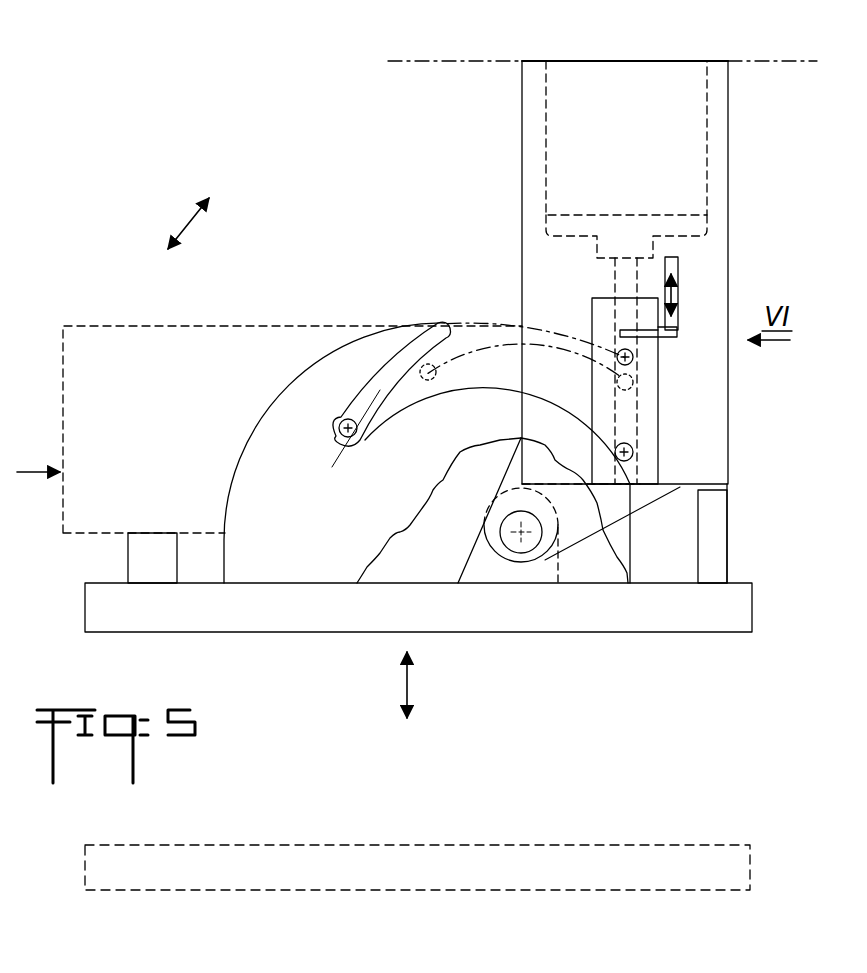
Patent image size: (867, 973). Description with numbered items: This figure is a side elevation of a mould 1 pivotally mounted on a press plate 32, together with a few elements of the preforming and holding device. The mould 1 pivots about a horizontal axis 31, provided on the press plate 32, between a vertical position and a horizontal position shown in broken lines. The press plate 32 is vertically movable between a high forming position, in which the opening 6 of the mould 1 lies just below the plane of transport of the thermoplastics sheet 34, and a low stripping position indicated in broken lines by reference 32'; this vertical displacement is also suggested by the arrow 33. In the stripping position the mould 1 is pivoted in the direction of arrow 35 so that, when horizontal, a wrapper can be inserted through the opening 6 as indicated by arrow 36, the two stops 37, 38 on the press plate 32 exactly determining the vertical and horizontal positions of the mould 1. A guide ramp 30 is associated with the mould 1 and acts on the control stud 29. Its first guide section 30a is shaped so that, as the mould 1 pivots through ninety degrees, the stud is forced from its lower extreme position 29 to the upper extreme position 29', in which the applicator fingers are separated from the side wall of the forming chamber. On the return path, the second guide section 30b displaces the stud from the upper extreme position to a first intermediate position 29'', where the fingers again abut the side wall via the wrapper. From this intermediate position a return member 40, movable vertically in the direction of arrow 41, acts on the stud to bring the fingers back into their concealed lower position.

The mould 1 is at (728, 175).
The opening of the mould 6 is at (683, 62).
The control stud 29 is at (663, 453).
The upper extreme position of the control stud 29' is at (497, 395).
The first intermediate position of the control stud 29'' is at (571, 388).
The guide ramp 30 is at (316, 560).
The first guide section 30a is at (463, 390).
The second guide section 30b is at (357, 400).
The horizontal axis 31 is at (505, 542).
The press plate 32 is at (418, 635).
The stripping position of the press plate 32' is at (417, 845).
The vertical movement direction 33 is at (405, 690).
The thermoplastics sheet 34 is at (460, 62).
The arrow indicating pivoting direction 35 is at (190, 224).
The arrow indicating wrapper insertion 36 is at (36, 470).
The stop 37 is at (717, 537).
The stop 38 is at (156, 570).
The return member 40 is at (612, 318).
The arrow indicating movement of the return member 41 is at (678, 300).